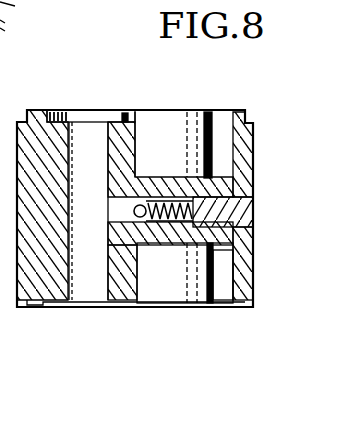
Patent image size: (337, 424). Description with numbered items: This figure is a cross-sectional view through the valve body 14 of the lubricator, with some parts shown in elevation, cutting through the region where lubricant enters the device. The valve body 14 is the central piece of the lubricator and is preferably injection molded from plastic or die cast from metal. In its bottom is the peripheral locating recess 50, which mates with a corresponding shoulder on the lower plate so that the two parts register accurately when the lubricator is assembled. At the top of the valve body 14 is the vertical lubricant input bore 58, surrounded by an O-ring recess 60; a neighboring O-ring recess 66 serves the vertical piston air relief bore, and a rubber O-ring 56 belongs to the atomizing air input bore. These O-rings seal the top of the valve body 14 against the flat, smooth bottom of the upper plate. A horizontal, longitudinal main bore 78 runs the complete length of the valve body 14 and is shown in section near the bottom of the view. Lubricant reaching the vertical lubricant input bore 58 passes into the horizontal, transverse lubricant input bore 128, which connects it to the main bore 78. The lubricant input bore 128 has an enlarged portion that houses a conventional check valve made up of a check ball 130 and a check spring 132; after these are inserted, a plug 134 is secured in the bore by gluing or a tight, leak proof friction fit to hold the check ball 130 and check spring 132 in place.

The valve body 14 is at (249, 172).
The peripheral locating recess 50 is at (31, 307).
The O-ring 56 is at (34, 184).
The vertical lubricant input bore 58 is at (83, 132).
The O-ring recess 60 is at (120, 121).
The O-ring recess 66 is at (197, 105).
The main bore 78 is at (180, 243).
The transverse lubricant input bore 128 is at (112, 208).
The check ball 130 is at (150, 240).
The check spring 132 is at (176, 182).
The plug 134 is at (253, 212).